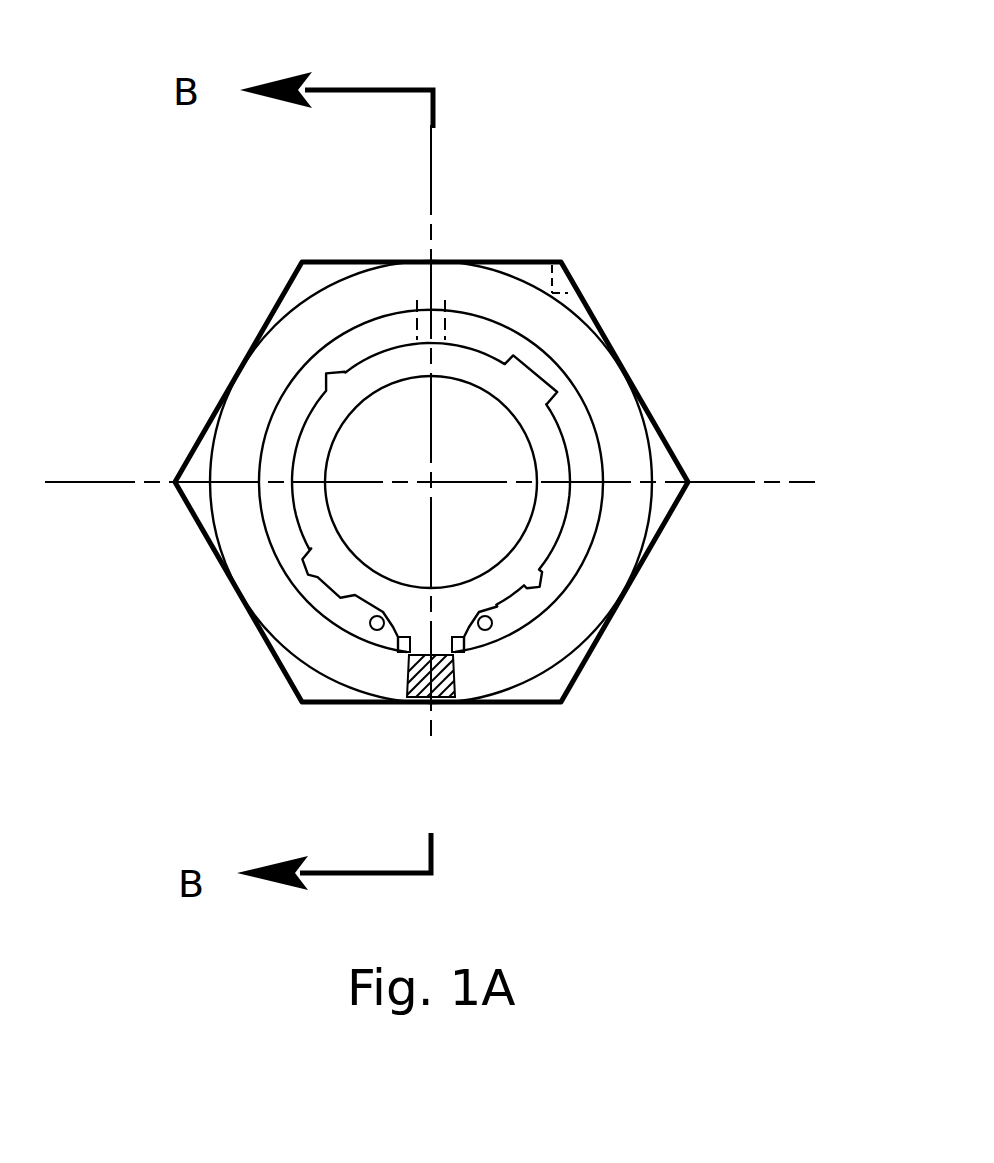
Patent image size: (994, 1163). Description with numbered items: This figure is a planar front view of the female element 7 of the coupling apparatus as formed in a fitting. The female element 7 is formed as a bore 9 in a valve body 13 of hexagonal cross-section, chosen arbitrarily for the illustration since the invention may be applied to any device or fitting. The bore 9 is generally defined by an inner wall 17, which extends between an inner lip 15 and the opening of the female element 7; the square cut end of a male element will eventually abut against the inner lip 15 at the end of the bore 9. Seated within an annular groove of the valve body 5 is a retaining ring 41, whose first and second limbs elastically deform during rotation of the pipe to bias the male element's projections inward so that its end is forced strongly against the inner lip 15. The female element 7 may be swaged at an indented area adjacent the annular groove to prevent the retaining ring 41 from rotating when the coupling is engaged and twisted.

The valve body 5 is at (590, 300).
The female element 7 is at (520, 180).
The bore 9 is at (490, 521).
The valve body 13 is at (656, 467).
The inner lip 15 is at (543, 445).
The inner wall 17 is at (325, 392).
The retaining ring 41 is at (520, 614).